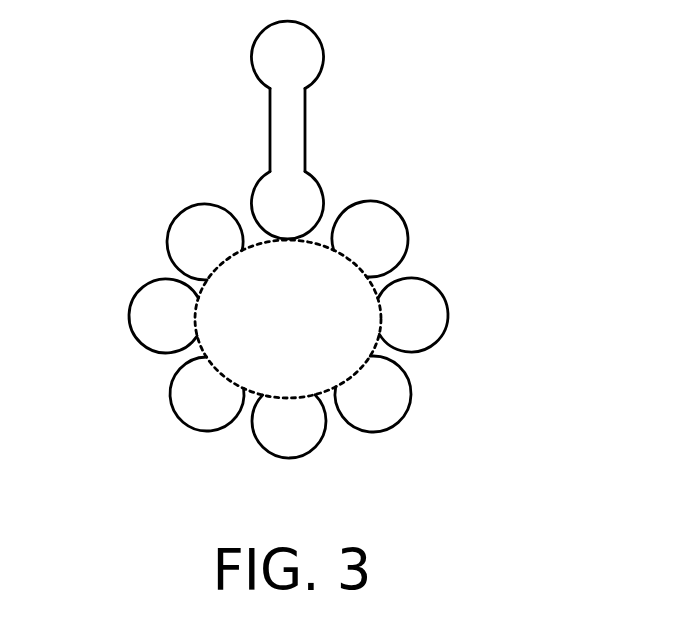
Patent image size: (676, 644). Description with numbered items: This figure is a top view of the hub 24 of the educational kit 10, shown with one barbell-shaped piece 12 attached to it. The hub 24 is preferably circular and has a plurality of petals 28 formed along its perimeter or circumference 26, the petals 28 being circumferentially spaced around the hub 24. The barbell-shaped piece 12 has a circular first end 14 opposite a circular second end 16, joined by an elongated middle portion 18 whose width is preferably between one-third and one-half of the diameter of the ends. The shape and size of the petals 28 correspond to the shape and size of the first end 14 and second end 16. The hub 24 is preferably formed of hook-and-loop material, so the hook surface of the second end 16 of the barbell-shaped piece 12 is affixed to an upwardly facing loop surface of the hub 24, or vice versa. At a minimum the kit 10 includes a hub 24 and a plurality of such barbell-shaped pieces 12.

The kit 10 is at (562, 140).
The barbell-shaped piece 12 is at (322, 44).
The first end 14 is at (250, 59).
The second end 16 is at (319, 181).
The elongated middle portion 18 is at (306, 126).
The hub 24 is at (398, 231).
The circumference 26 is at (198, 311).
The petals 28 is at (250, 198).